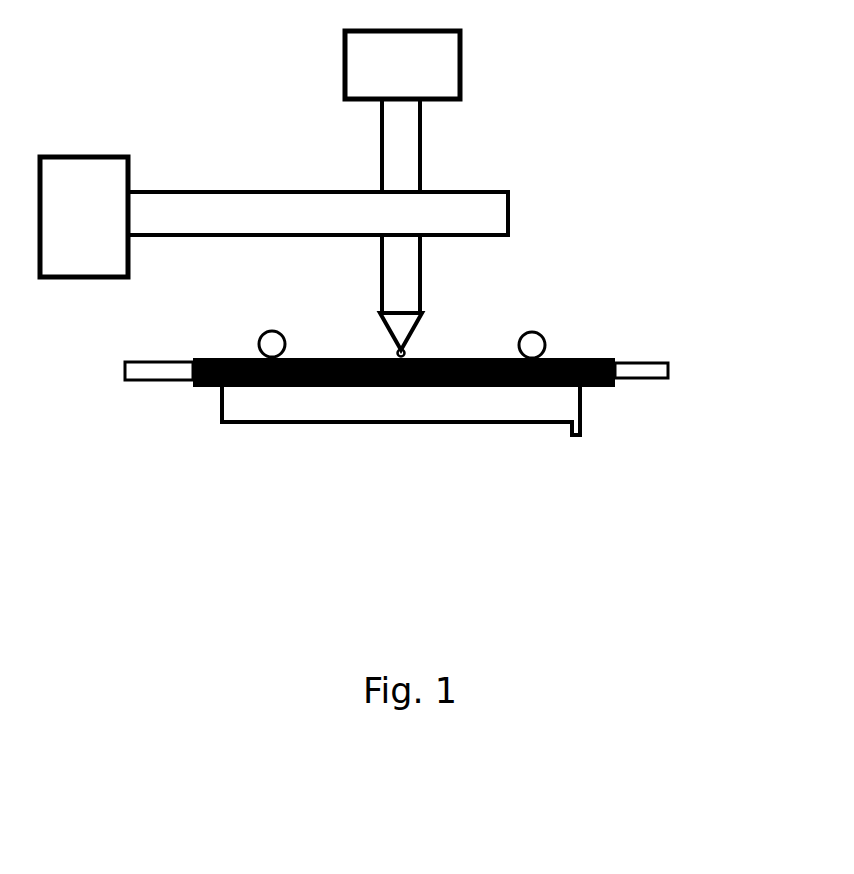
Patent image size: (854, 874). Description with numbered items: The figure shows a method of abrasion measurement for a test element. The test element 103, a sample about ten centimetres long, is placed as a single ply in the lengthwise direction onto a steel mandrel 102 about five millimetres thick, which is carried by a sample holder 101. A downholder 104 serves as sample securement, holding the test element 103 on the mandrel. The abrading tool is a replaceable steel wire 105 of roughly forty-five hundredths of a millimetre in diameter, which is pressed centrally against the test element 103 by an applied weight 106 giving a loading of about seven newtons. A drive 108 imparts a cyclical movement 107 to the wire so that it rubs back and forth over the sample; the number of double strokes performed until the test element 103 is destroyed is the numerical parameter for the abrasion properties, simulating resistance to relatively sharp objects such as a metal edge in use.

The sample holder 101 is at (237, 422).
The steel mandrel 102 is at (670, 368).
The test element 103 is at (194, 358).
The downholder 104 is at (546, 333).
The replaceable steel wire 105 is at (410, 350).
The applied weight 106 is at (416, 67).
The cyclical movement 107 is at (340, 167).
The drive 108 is at (84, 202).